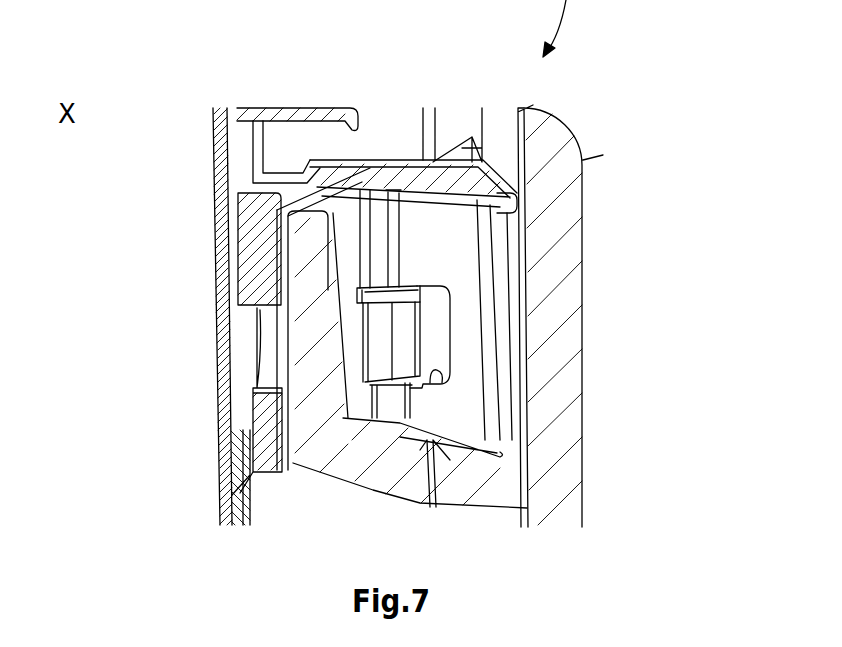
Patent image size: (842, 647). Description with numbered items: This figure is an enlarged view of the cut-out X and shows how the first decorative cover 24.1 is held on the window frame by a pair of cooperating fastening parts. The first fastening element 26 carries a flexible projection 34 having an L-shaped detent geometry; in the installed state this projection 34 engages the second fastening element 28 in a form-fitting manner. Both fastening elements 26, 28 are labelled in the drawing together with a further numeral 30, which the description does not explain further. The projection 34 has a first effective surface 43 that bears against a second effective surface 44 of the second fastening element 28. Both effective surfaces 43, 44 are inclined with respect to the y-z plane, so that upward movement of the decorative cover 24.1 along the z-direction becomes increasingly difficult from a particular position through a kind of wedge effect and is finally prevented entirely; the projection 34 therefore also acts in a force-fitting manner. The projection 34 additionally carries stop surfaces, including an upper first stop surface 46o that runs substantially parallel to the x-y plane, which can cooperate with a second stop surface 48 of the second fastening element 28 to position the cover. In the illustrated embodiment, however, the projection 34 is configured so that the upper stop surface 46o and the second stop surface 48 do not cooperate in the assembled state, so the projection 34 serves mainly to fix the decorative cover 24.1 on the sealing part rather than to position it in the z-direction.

The first decorative cover 24.1 is at (557, 150).
The first fastening element 26 is at (236, 214).
The second fastening element 28 is at (507, 237).
The guide walls 30 is at (401, 232).
The flexible projection 34 is at (420, 332).
The first effective surface 43 is at (357, 302).
The second effective surface 44 is at (353, 228).
The upper first stop surface 46o is at (513, 302).
The second stop surface 48 is at (444, 383).